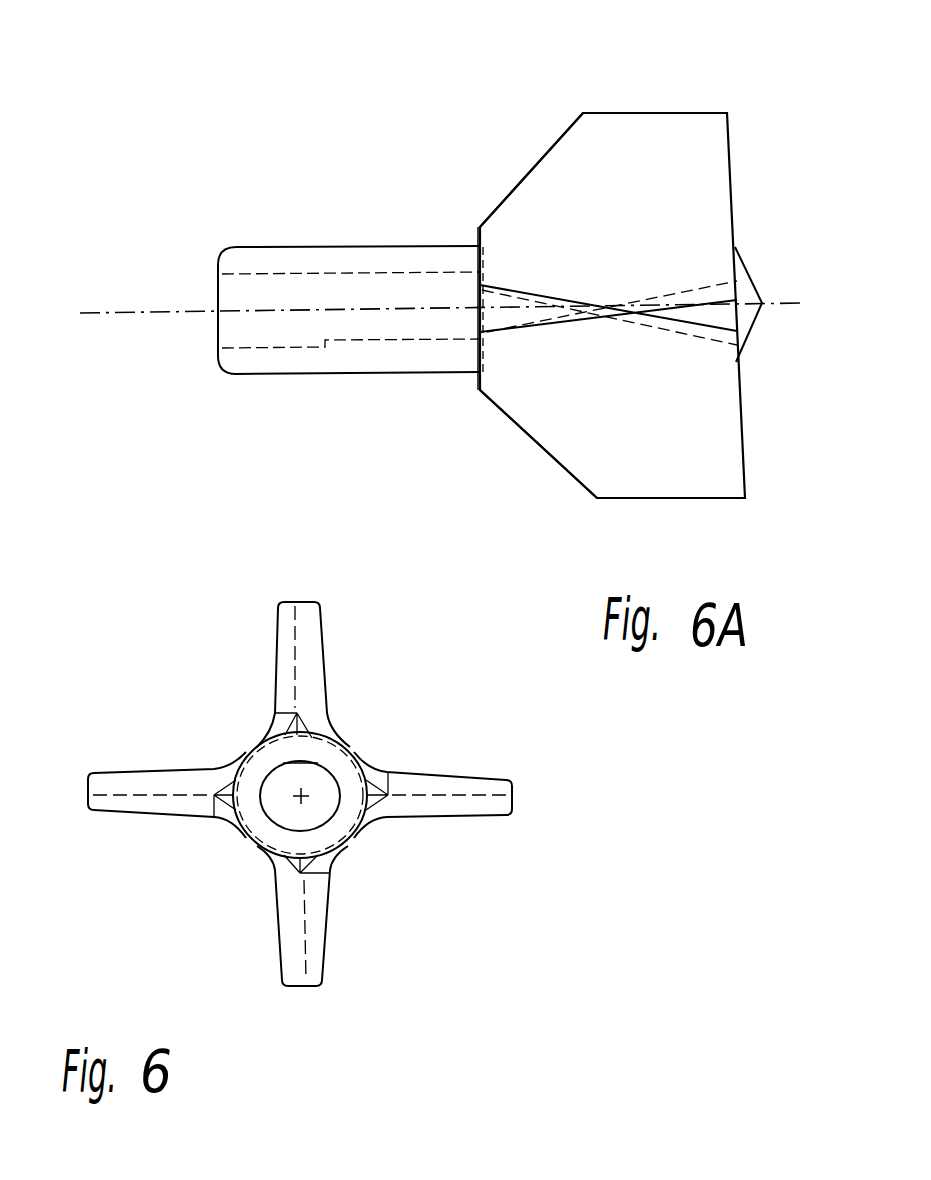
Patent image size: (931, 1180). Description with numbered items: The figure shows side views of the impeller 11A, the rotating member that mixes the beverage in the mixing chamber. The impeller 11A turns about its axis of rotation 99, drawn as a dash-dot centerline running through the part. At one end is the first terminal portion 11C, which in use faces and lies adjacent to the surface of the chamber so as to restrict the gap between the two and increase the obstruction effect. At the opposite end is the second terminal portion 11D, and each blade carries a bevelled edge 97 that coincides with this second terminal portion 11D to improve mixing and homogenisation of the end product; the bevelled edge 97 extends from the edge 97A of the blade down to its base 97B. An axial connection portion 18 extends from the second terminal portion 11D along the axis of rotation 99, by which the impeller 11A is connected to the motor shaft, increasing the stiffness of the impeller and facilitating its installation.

In FIG. 6A, the impeller 11A is at (173, 133).
In FIG. 6, the impeller 11A is at (157, 712).
In FIG. 6A, the first terminal portion 11C is at (741, 128).
In FIG. 6A, the second terminal portion 11D is at (477, 218).
In FIG. 6A, the axial connection portion 18 is at (295, 263).
In FIG. 6, the axial connection portion 18 is at (258, 818).
In FIG. 6A, the bevelled edge 97 is at (537, 160).
In FIG. 6A, the edge of the blade 97A is at (584, 112).
In FIG. 6A, the base of the blade 97B is at (480, 395).
In FIG. 6A, the axis of rotation 99 is at (110, 313).
In FIG. 6, the axis of rotation 99 is at (306, 801).